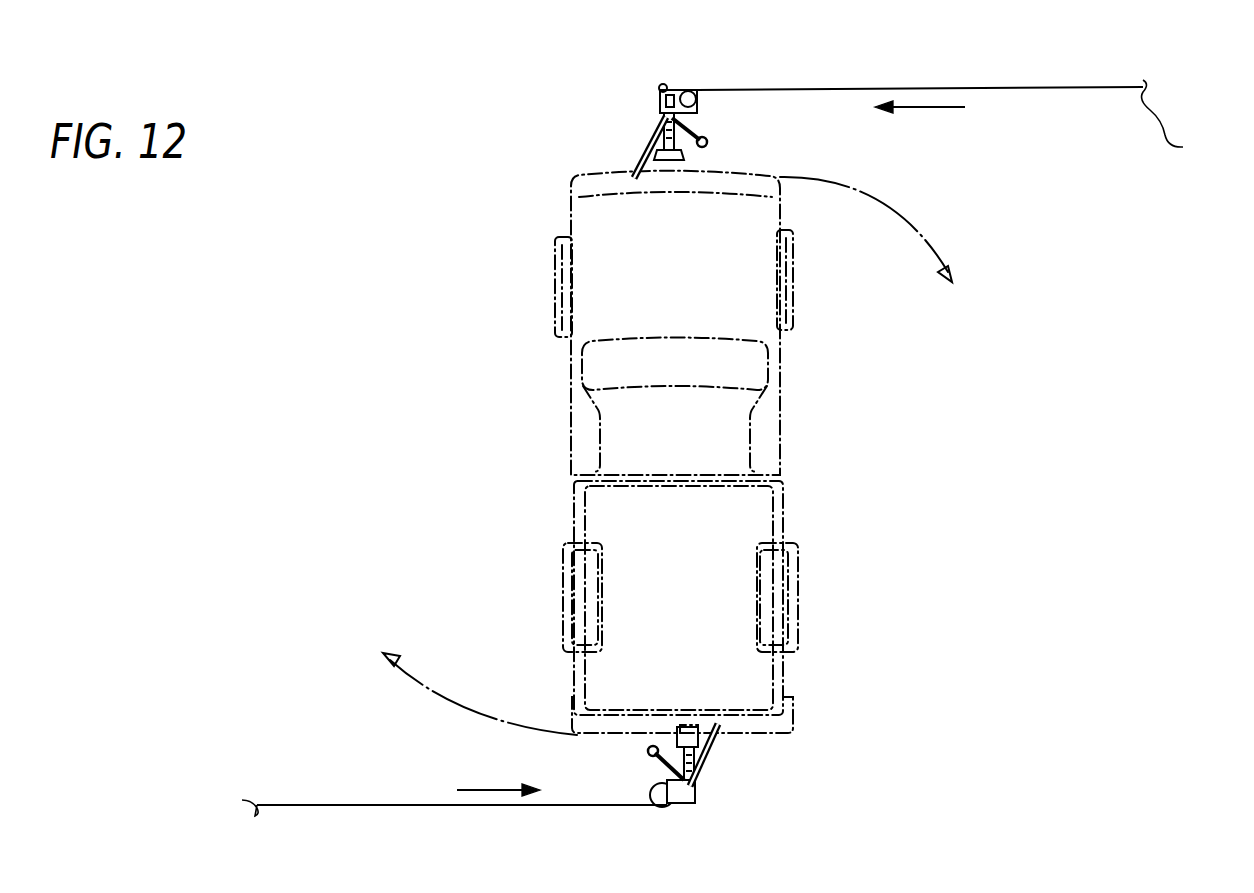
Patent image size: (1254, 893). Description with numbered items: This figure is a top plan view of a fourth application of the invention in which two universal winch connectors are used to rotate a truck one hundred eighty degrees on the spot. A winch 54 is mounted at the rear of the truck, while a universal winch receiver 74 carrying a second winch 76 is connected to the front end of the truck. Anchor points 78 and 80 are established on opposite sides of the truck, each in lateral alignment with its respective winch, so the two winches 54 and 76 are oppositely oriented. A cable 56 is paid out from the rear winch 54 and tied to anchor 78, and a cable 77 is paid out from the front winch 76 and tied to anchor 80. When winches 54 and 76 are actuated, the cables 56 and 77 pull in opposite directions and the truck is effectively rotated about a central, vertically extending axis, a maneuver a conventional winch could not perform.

The winch 54 is at (697, 797).
The cable 56 is at (547, 805).
The universal winch receiver 74 is at (673, 158).
The winch 76 is at (697, 105).
The cable 77 is at (870, 87).
The anchor point 78 is at (234, 801).
The anchor point 80 is at (1181, 122).